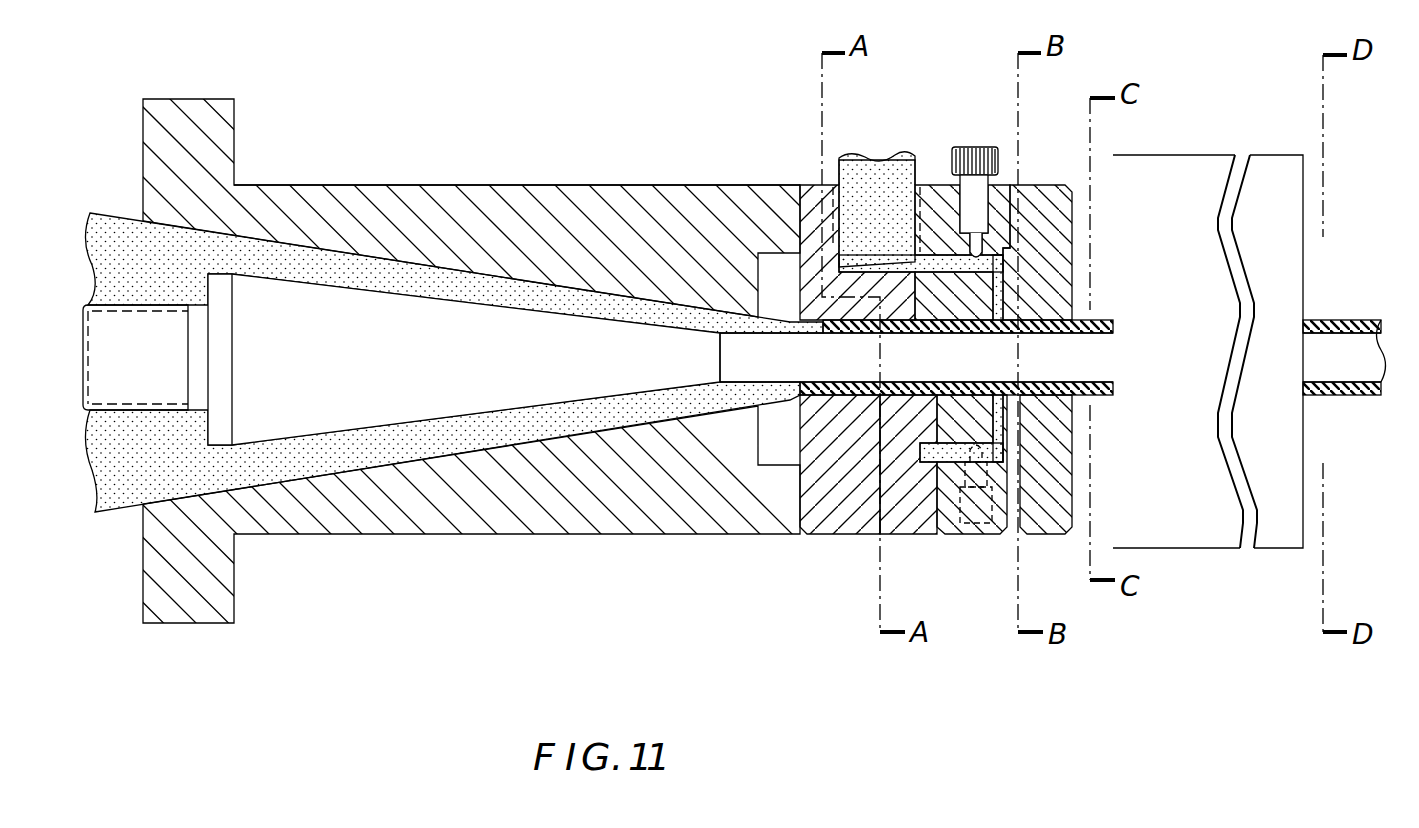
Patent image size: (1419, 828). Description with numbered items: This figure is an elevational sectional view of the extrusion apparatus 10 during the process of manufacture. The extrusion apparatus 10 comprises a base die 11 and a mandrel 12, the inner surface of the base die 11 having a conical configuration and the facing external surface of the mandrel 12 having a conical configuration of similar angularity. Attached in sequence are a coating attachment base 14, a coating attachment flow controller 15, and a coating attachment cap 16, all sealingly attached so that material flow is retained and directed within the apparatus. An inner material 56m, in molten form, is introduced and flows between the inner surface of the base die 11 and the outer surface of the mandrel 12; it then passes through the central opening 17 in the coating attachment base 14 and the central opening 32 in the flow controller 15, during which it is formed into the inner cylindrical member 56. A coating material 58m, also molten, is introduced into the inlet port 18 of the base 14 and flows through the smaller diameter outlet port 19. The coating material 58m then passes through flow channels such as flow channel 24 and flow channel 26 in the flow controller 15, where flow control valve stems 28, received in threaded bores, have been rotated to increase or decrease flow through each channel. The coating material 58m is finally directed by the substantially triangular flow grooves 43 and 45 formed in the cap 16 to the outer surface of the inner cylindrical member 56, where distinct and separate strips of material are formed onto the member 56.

The extrusion apparatus 10 is at (710, 537).
The base die 11 is at (456, 185).
The mandrel 12 is at (306, 362).
The coating attachment base 14 is at (818, 535).
The coating attachment flow controller 15 is at (955, 540).
The coating attachment cap 16 is at (1040, 535).
The central opening 17 is at (792, 322).
The inlet port 18 is at (900, 165).
The outlet port 19 is at (905, 262).
The flow channel 24 is at (983, 325).
The flow channel 26 is at (1000, 397).
The flow control valve stem 28 is at (972, 147).
The central opening 32 is at (916, 357).
The flow groove 43 is at (1010, 268).
The flow groove 45 is at (1003, 470).
The inner cylindrical member 56 is at (1090, 330).
The inner material 56m is at (176, 292).
The coating material 58m is at (850, 165).